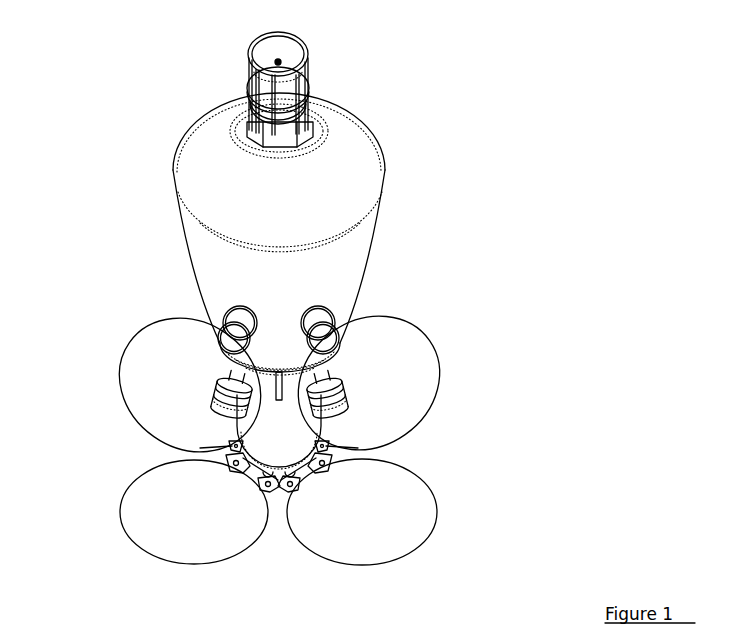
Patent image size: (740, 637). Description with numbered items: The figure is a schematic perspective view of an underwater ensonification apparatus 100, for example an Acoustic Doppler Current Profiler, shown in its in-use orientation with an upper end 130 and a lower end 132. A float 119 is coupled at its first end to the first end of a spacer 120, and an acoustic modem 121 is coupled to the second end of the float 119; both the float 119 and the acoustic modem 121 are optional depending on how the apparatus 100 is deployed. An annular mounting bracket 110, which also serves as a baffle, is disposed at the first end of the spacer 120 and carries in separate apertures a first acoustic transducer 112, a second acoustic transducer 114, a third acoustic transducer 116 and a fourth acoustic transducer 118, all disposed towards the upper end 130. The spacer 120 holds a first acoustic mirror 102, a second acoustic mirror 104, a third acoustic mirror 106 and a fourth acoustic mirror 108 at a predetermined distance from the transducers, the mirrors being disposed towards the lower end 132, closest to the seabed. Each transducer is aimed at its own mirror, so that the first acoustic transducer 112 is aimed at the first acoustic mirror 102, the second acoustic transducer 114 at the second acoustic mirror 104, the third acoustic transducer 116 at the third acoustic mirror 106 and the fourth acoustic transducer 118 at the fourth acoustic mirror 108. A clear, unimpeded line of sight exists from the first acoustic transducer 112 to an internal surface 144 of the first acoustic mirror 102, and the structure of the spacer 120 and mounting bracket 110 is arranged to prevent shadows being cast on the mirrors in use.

The underwater ensonification apparatus 100 is at (466, 210).
The first acoustic mirror 102 is at (132, 385).
The second acoustic mirror 104 is at (427, 377).
The third acoustic mirror 106 is at (408, 538).
The fourth acoustic mirror 108 is at (147, 533).
The annular mounting bracket 110 is at (148, 357).
The first acoustic transducer 112 is at (226, 344).
The second acoustic transducer 114 is at (338, 343).
The third acoustic transducer 116 is at (333, 416).
The fourth acoustic transducer 118 is at (230, 414).
The float 119 is at (368, 152).
The spacer 120 is at (266, 441).
The acoustic modem 121 is at (300, 104).
The upper end 130 is at (304, 34).
The lower end 132 is at (277, 550).
The internal surface 144 is at (228, 386).